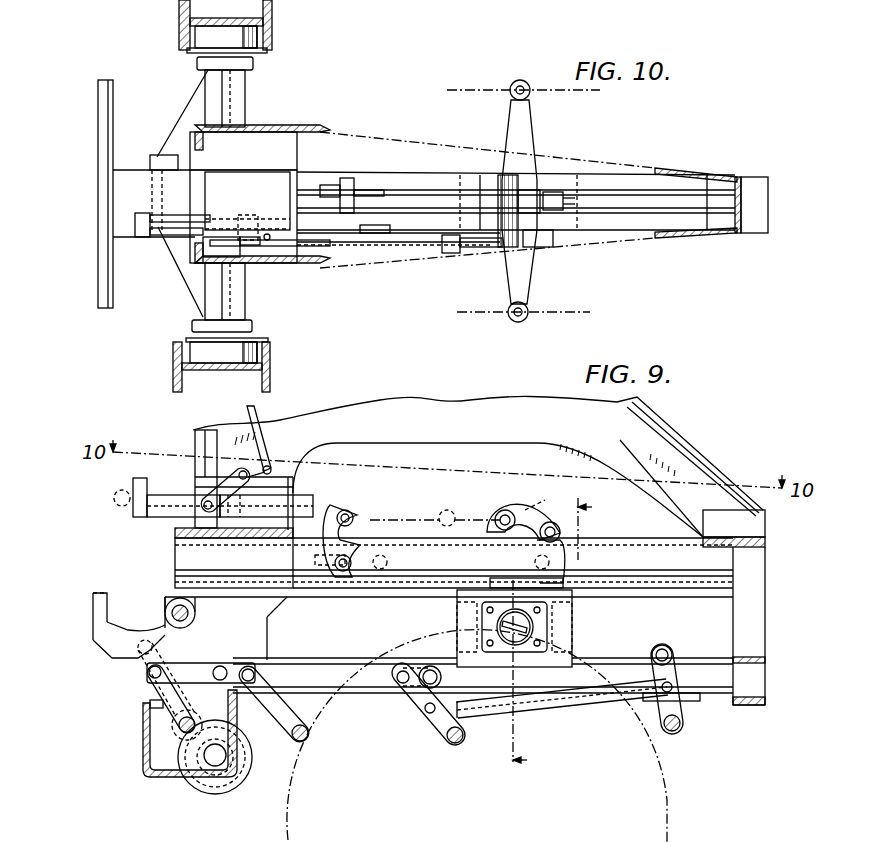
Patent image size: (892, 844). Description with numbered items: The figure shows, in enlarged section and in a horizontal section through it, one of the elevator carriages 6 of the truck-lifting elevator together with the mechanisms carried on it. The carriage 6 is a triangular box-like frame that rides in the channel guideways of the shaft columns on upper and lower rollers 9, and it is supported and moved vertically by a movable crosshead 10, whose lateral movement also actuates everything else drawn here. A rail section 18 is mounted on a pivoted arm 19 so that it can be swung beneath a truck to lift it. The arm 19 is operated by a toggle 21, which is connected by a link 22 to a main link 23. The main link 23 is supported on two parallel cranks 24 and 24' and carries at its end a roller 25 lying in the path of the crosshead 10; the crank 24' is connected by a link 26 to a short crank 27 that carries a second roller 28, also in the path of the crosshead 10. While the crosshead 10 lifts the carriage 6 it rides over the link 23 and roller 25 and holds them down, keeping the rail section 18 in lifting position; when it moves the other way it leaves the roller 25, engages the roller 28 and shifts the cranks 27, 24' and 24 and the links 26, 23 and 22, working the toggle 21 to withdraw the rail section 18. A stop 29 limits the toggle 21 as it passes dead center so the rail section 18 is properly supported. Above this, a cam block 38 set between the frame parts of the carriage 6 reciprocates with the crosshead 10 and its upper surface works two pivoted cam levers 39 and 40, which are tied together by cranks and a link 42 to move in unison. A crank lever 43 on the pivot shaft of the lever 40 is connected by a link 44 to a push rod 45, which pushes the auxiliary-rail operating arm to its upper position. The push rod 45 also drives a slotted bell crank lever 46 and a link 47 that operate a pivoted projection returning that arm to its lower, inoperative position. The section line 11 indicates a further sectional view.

In FIG. 10, the carriage 6 is at (290, 127).
In FIG. 9, the carriage 6 is at (174, 547).
In FIG. 9, the roller 9 is at (256, 760).
In FIG. 10, the crosshead 10 is at (508, 256).
In FIG. 9, the crosshead 10 is at (568, 631).
In FIG. 9, the section line 11 is at (668, 798).
In FIG. 10, the rail section 18 is at (110, 154).
In FIG. 9, the rail section 18 is at (93, 605).
In FIG. 10, the pivoted arm 19 is at (118, 232).
In FIG. 9, the pivoted arm 19 is at (116, 656).
In FIG. 9, the toggle 21 is at (150, 674).
In FIG. 9, the link 22 is at (204, 662).
In FIG. 9, the main link 23 is at (327, 672).
In FIG. 9, the crank 24 is at (247, 703).
In FIG. 9, the crank 24' is at (428, 704).
In FIG. 9, the roller 25 is at (442, 677).
In FIG. 9, the link 26 is at (568, 706).
In FIG. 9, the short crank 27 is at (676, 672).
In FIG. 9, the roller 28 is at (662, 645).
In FIG. 9, the stop 29 is at (143, 707).
In FIG. 10, the cam block 38 is at (418, 198).
In FIG. 9, the cam block 38 is at (420, 543).
In FIG. 10, the cam lever 39 is at (328, 200).
In FIG. 9, the cam lever 39 is at (333, 547).
In FIG. 10, the cam lever 40 is at (531, 197).
In FIG. 9, the cam lever 40 is at (530, 505).
In FIG. 10, the link 42 is at (428, 233).
In FIG. 10, the crank lever 43 is at (478, 252).
In FIG. 10, the link 44 is at (330, 246).
In FIG. 9, the link 44 is at (310, 503).
In FIG. 10, the push rod 45 is at (163, 223).
In FIG. 9, the push rod 45 is at (142, 508).
In FIG. 10, the slotted bell crank lever 46 is at (240, 252).
In FIG. 9, the slotted bell crank lever 46 is at (213, 490).
In FIG. 10, the link 47 is at (267, 234).
In FIG. 9, the link 47 is at (258, 428).